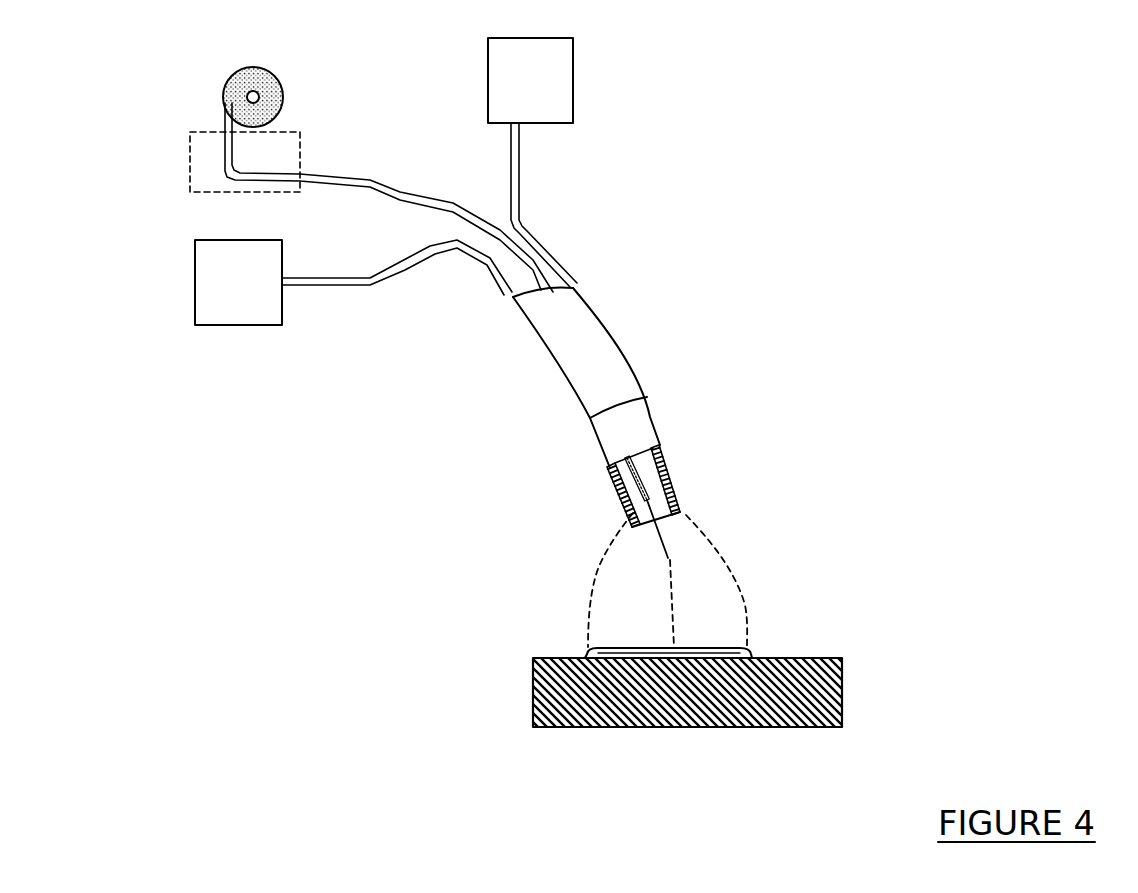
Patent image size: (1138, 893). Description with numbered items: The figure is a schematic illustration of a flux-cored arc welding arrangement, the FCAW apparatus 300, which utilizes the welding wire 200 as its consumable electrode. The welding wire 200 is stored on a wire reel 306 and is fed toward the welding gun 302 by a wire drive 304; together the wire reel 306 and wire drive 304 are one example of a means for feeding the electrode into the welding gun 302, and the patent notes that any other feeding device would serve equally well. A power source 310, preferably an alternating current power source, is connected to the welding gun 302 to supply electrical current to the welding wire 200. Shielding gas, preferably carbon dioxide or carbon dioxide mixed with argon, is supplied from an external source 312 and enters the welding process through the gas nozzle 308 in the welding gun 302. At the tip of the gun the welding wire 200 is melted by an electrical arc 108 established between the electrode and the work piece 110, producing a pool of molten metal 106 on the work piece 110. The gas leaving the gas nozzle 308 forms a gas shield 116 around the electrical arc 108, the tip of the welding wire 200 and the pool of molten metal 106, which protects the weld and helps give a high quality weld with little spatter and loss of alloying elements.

The FCAW apparatus 300 is at (1030, 187).
The welding gun 302 is at (619, 363).
The wire drive 304 is at (297, 130).
The wire reel 306 is at (185, 112).
The gas nozzle 308 is at (691, 459).
The power source 310 is at (598, 162).
The external source 312 is at (353, 322).
The welding wire 200 is at (500, 375).
The electrical arc 108 is at (673, 598).
The gas shield 116 is at (712, 568).
The molten metal 106 is at (723, 600).
The work piece 110 is at (694, 736).